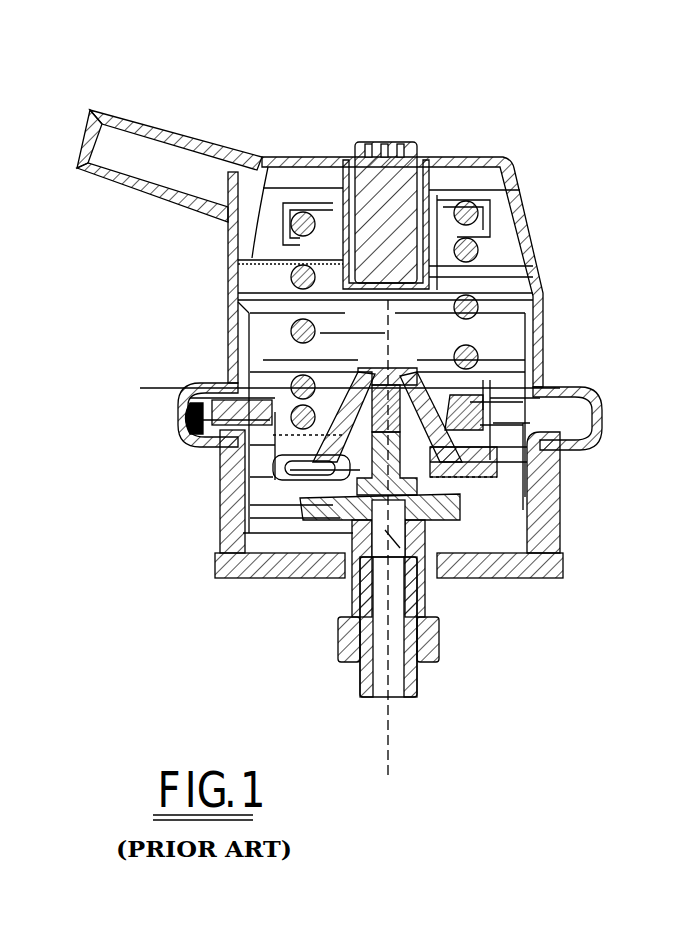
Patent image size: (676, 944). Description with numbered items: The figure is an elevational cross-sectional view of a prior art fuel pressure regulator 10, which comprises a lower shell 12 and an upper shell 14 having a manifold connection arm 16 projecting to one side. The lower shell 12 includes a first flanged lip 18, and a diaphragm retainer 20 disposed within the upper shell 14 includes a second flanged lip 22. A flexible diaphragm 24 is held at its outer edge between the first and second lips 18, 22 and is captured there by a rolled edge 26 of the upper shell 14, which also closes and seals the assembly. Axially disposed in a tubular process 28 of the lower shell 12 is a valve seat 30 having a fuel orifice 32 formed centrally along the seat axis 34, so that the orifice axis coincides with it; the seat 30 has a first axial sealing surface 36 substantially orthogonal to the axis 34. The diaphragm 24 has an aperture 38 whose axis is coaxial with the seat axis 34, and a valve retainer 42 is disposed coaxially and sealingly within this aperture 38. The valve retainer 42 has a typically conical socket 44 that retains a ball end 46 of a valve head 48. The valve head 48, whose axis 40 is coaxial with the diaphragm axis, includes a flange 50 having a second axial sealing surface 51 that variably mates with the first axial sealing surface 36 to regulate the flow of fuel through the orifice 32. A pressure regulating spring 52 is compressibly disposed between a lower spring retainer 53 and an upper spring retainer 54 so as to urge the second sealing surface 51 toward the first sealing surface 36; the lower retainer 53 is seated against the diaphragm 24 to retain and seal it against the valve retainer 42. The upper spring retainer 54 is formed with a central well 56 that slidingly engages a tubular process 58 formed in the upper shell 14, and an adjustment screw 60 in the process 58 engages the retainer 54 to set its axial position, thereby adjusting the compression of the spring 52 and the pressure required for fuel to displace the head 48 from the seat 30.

The fuel pressure regulator 10 is at (580, 158).
The lower shell 12 is at (250, 500).
The upper shell 14 is at (227, 293).
The manifold connection arm 16 is at (143, 200).
The first flanged lip 18 is at (198, 443).
The diaphragm retainer 20 is at (230, 345).
The second flanged lip 22 is at (178, 398).
The flexible diaphragm 24 is at (232, 372).
The rolled edge 26 is at (178, 424).
The tubular process 28 is at (340, 580).
The valve seat 30 is at (257, 575).
The fuel orifice 32 is at (432, 582).
The seat axis 34 is at (387, 726).
The first axial sealing surface 36 is at (462, 577).
The aperture 38 is at (537, 452).
The axis 40 is at (395, 348).
The valve retainer 42 is at (222, 460).
The conical socket 44 is at (373, 483).
The ball end 46 is at (420, 395).
The valve head 48 is at (400, 485).
The flange 50 is at (470, 507).
The second axial sealing surface 51 is at (565, 568).
The pressure regulating spring 52 is at (490, 357).
The lower spring retainer 53 is at (560, 388).
The upper spring retainer 54 is at (487, 207).
The central well 56 is at (535, 278).
The tubular process 58 is at (440, 197).
The adjustment screw 60 is at (378, 205).